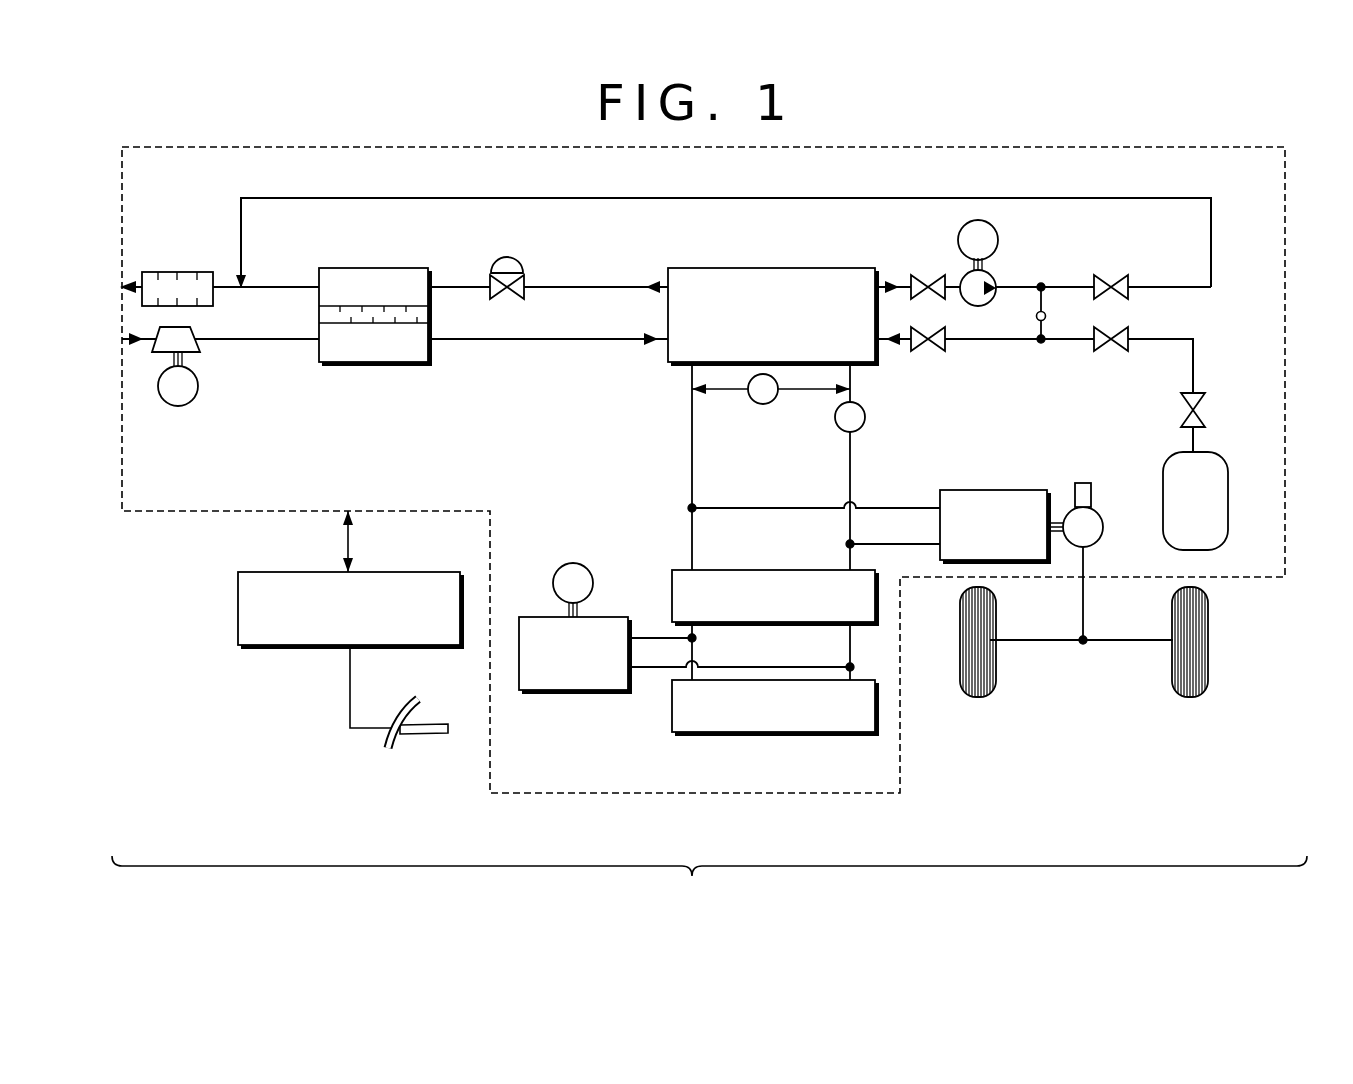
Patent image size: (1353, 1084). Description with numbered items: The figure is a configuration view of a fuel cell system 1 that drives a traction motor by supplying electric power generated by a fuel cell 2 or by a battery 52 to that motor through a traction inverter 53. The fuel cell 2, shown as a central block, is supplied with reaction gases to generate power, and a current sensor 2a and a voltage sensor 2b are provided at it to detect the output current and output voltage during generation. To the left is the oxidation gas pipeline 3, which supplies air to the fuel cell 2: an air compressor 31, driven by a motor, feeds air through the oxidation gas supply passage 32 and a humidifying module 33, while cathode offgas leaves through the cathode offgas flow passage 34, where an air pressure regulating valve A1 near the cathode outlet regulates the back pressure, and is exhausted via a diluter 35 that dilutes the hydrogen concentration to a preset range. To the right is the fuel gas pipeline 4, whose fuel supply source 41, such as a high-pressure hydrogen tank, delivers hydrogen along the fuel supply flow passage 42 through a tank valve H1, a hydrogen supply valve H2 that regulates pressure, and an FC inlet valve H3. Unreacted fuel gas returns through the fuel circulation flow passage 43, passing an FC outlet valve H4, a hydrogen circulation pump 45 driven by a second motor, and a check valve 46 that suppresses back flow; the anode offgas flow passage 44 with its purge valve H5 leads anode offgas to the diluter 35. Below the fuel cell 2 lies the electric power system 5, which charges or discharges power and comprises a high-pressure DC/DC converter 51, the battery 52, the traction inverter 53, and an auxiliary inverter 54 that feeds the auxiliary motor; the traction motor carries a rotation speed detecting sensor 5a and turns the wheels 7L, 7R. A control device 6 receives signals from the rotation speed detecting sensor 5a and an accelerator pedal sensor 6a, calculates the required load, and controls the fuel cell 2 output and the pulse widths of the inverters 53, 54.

The fuel cell system 1 is at (709, 883).
The fuel cell 2 is at (715, 268).
The current sensor 2a is at (864, 422).
The voltage sensor 2b is at (760, 404).
The oxidation gas pipeline 3 is at (381, 357).
The air compressor 31 is at (200, 340).
The oxidation gas supply passage 32 is at (470, 340).
The humidifying module 33 is at (400, 362).
The cathode offgas flow passage 34 is at (580, 287).
The diluter 35 is at (165, 272).
The air pressure regulating valve A1 is at (513, 256).
The fuel gas pipeline 4 is at (1091, 397).
The fuel supply source 41 is at (1160, 497).
The fuel supply flow passage 42 is at (1025, 342).
The fuel circulation flow passage 43 is at (1023, 291).
The anode offgas flow passage 44 is at (1165, 287).
The hydrogen circulation pump 45 is at (997, 283).
The check valve 46 is at (1046, 316).
The tank valve H1 is at (1183, 395).
The hydrogen supply valve H2 is at (1111, 352).
The FC inlet valve H3 is at (910, 352).
The FC outlet valve H4 is at (910, 275).
The purge valve H5 is at (1111, 275).
The electric power system 5 is at (801, 609).
The rotation speed detecting sensor 5a is at (1083, 483).
The high-pressure DC/DC converter 51 is at (748, 570).
The battery 52 is at (763, 732).
The traction inverter 53 is at (972, 490).
The auxiliary inverter 54 is at (543, 617).
The control device 6 is at (275, 645).
The accelerator pedal sensor 6a is at (405, 712).
The wheel 7L is at (975, 697).
The wheel 7R is at (1190, 697).